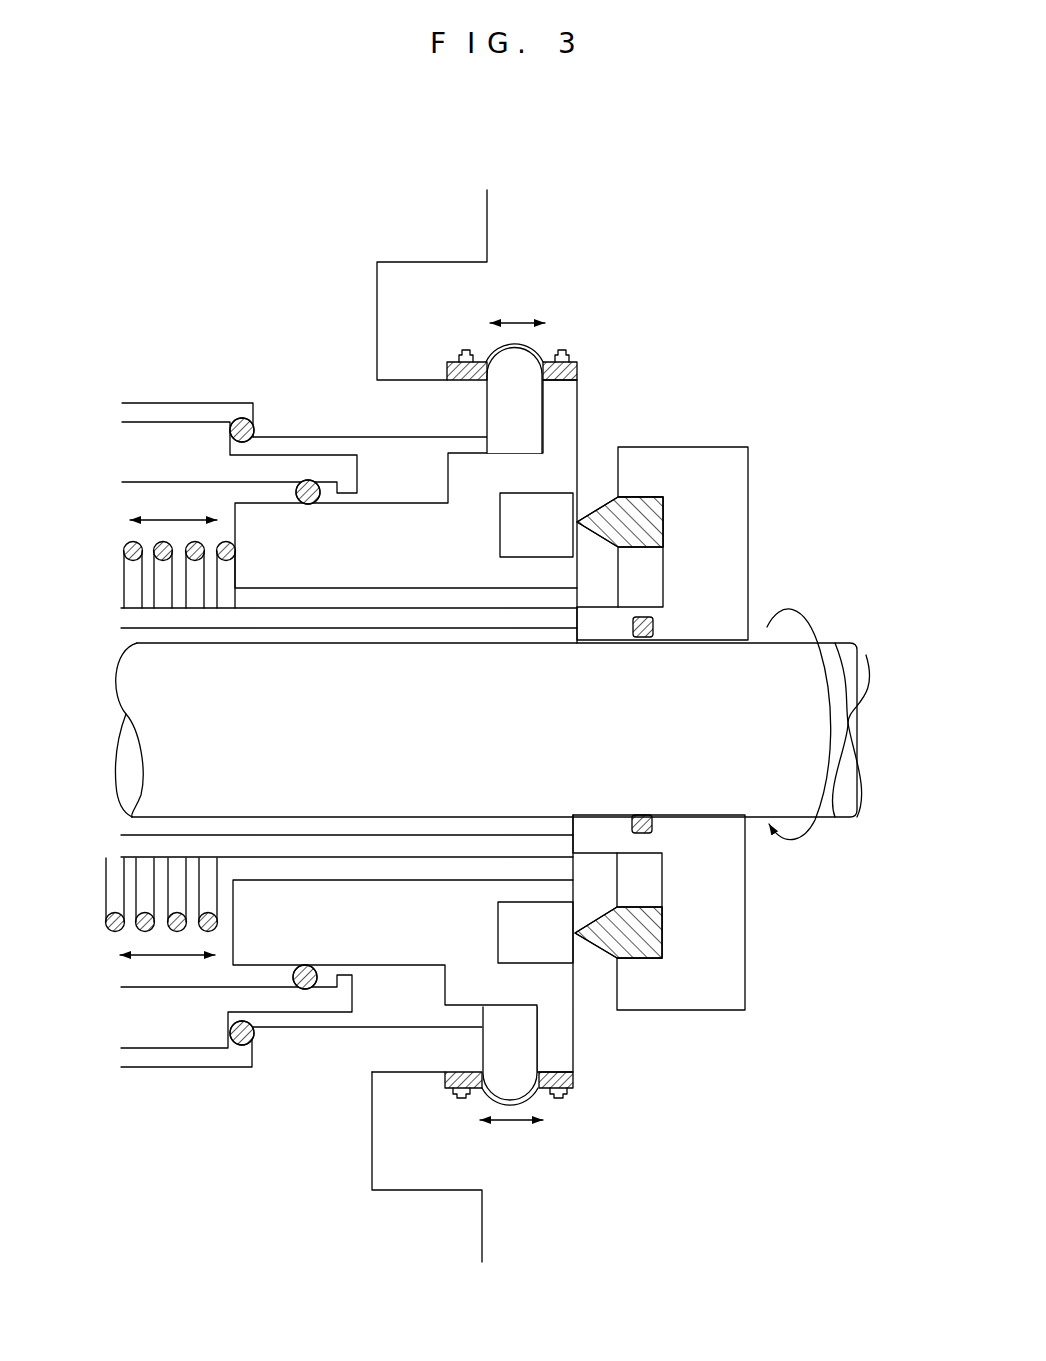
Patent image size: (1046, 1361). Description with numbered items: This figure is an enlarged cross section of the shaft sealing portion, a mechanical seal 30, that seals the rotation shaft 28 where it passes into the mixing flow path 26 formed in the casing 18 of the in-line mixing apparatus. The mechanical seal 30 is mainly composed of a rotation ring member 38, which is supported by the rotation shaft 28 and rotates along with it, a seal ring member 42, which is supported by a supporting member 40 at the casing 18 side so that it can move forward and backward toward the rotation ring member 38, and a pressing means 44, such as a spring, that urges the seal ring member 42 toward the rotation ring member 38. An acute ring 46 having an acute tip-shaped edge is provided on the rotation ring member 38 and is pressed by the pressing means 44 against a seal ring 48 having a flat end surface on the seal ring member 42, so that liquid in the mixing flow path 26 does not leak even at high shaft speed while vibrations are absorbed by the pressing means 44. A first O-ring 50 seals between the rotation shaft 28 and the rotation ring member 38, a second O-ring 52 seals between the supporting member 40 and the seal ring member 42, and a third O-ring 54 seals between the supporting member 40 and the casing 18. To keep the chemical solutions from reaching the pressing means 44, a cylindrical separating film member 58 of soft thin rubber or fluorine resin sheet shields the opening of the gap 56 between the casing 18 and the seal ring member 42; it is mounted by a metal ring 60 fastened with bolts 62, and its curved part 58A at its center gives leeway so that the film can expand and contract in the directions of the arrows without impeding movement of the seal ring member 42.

The casing 18 is at (472, 224).
The mixing flow path 26 is at (807, 350).
The rotation shaft 28 is at (150, 697).
The mechanical seal 30 is at (421, 678).
The rotation ring member 38 is at (760, 496).
The supporting member 40 is at (153, 457).
The seal ring member 42 is at (584, 413).
The pressing means 44 is at (121, 583).
The acute ring 46 is at (630, 510).
The seal ring 48 is at (579, 496).
The first O-ring 50 is at (658, 627).
The second O-ring 52 is at (321, 485).
The third O-ring 54 is at (256, 421).
The gap 56 is at (540, 372).
The separating film member 58 is at (489, 347).
The curved part 58A is at (513, 400).
The metal ring 60 is at (450, 371).
The bolts 62 is at (466, 352).